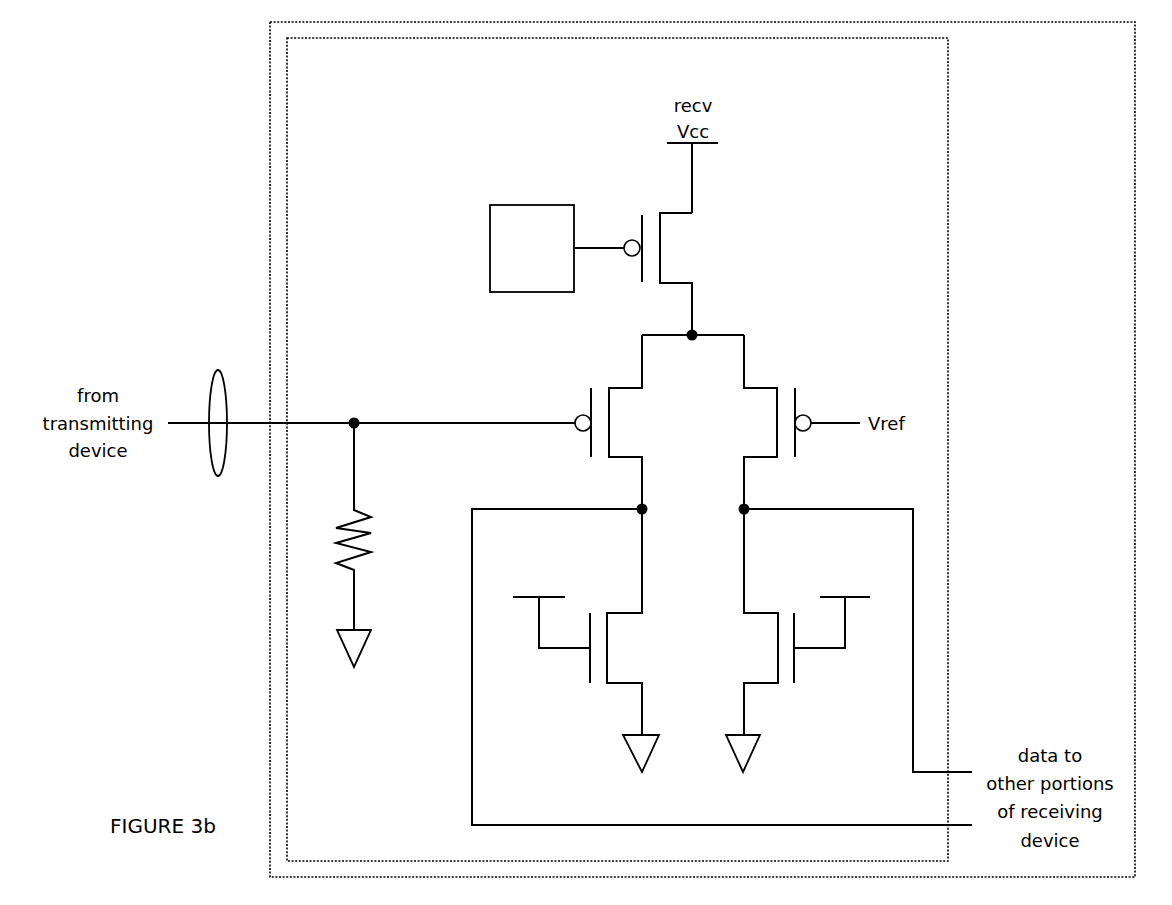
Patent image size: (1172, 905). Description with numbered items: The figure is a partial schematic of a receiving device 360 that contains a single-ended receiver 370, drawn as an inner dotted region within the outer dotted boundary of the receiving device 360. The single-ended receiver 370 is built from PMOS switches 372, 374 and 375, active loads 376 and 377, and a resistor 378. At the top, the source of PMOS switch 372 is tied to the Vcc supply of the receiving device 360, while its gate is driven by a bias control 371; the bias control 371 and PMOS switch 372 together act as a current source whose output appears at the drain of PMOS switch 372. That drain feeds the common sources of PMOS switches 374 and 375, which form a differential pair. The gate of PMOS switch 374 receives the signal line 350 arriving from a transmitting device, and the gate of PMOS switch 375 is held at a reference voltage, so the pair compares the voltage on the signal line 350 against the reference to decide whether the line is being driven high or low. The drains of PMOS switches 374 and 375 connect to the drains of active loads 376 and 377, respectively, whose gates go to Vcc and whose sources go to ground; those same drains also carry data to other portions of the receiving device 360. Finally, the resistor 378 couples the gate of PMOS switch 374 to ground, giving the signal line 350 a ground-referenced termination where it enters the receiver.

The signal line 350 is at (218, 476).
The receiving device 360 is at (1026, 296).
The single-ended receiver 370 is at (821, 296).
The bias control 371 is at (515, 286).
The PMOS switch 372 is at (675, 259).
The PMOS switch 374 is at (625, 434).
The PMOS switch 375 is at (727, 434).
The active load 376 is at (625, 661).
The active load 377 is at (727, 661).
The resistor 378 is at (367, 552).